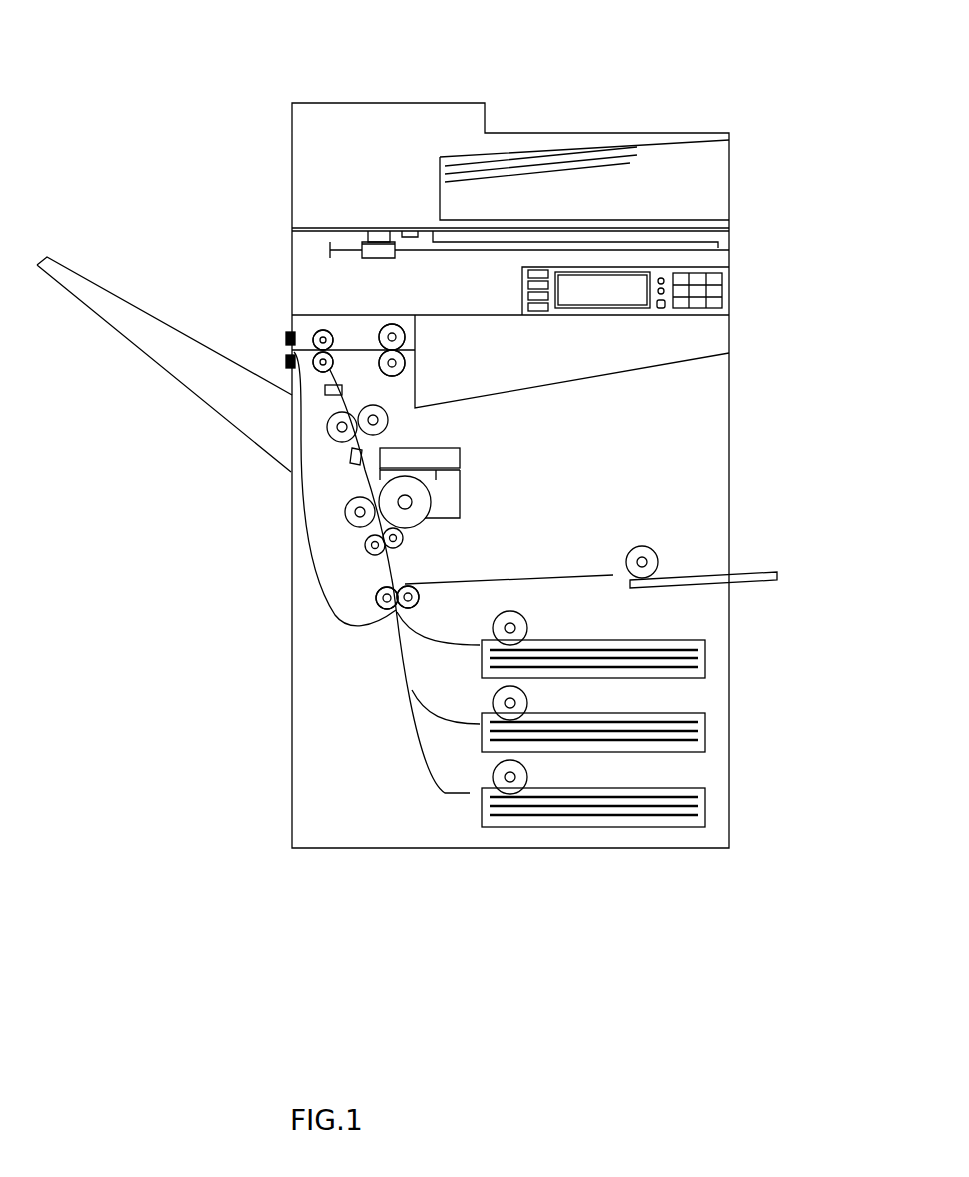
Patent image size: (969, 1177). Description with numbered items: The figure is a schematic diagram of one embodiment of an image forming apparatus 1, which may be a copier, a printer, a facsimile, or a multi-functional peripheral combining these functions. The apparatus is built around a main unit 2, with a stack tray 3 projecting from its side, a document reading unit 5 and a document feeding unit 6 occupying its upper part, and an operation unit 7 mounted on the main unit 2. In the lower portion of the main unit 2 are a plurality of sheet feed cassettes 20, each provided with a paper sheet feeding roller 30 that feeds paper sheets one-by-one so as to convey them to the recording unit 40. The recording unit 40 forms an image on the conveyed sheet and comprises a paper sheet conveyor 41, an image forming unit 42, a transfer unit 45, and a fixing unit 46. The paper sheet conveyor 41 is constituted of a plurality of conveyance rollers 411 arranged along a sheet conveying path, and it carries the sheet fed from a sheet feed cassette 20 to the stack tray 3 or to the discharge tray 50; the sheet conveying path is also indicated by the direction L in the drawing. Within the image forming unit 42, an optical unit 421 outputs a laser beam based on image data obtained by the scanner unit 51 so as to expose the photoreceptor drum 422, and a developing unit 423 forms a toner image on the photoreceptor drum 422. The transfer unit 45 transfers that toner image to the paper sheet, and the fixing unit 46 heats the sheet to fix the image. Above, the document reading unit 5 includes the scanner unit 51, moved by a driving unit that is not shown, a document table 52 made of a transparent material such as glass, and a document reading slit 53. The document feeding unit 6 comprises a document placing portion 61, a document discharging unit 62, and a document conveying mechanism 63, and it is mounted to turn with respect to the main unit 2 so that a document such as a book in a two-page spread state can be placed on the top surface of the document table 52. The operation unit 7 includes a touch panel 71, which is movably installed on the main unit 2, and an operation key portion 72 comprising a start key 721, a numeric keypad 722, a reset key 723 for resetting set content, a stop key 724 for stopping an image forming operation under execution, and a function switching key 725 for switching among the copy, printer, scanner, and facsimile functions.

The image forming apparatus 1 is at (793, 107).
The main unit 2 is at (730, 480).
The stack tray 3 is at (155, 350).
The document reading unit 5 is at (313, 261).
The document feeding unit 6 is at (538, 137).
The operation unit 7 is at (598, 263).
The sheet feed cassettes 20 is at (705, 655).
The paper sheet feeding rollers 30 is at (528, 627).
The recording unit 40 is at (328, 499).
The paper sheet conveyor 41 is at (226, 299).
The image forming unit 42 is at (507, 498).
The transfer unit 45 is at (348, 530).
The fixing unit 46 is at (345, 445).
The discharge tray 50 is at (568, 386).
The scanner unit 51 is at (379, 259).
The document table 52 is at (733, 240).
The document reading slit 53 is at (377, 228).
The document placing portion 61 is at (658, 140).
The document discharging unit 62 is at (688, 228).
The document conveying mechanism 63 is at (356, 165).
The touch panel 71 is at (568, 270).
The operation key portion 72 is at (680, 335).
The conveyance rollers 411 is at (378, 333).
The optical unit 421 is at (460, 457).
The photoreceptor drum 422 is at (413, 537).
The developing unit 423 is at (432, 505).
The start key 721 is at (661, 308).
The numeric keypad 722 is at (697, 310).
The reset key 723 is at (664, 290).
The stop key 724 is at (658, 279).
The function switching key 725 is at (526, 298).
The conveyance direction L is at (293, 488).